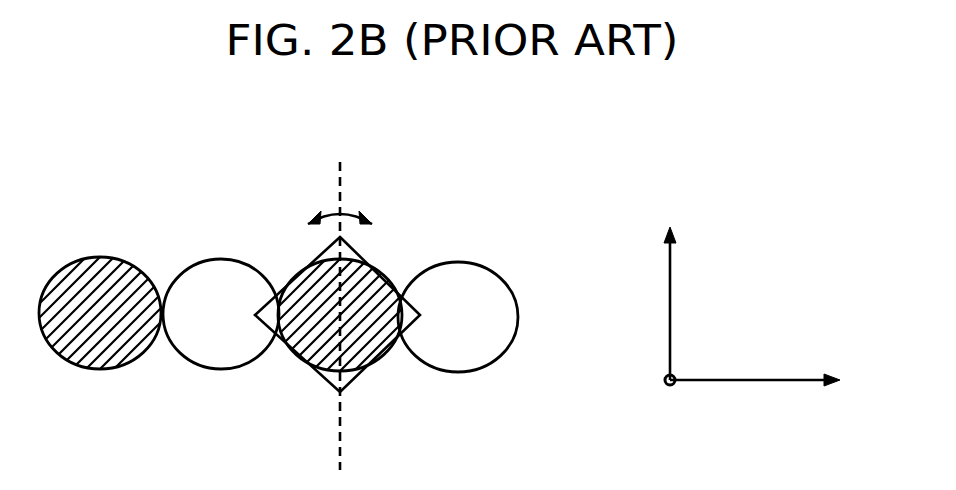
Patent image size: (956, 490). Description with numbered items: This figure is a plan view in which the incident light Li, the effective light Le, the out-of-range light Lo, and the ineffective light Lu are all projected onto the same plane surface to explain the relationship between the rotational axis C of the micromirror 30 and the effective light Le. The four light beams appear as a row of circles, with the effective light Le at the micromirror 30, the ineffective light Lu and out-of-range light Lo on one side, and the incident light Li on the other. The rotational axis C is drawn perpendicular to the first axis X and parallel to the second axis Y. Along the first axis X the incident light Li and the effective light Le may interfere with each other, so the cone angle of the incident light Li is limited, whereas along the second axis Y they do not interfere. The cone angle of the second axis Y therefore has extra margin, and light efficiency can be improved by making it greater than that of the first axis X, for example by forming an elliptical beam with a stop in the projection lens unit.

The ineffective light Lu is at (98, 364).
The out-of-range light Lo is at (218, 370).
The effective light Le is at (320, 373).
The micromirror 30 is at (357, 378).
The incident light Li is at (459, 372).
The rotational axis C is at (340, 297).
The first axis X is at (767, 381).
The second axis Y is at (672, 283).